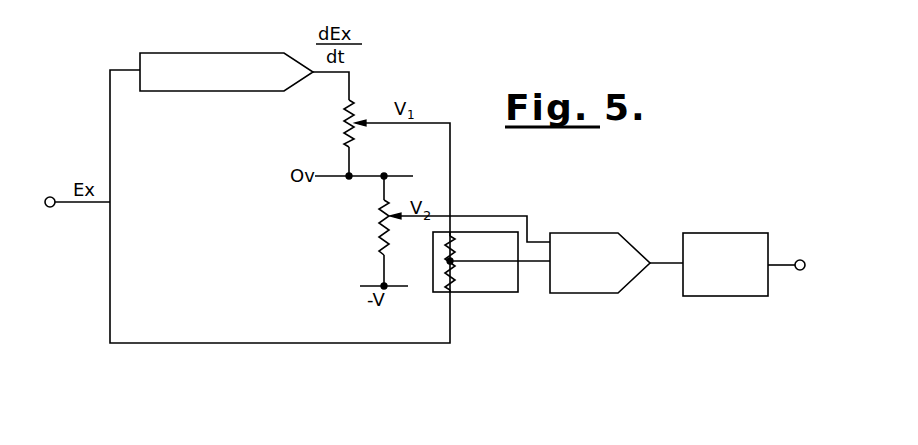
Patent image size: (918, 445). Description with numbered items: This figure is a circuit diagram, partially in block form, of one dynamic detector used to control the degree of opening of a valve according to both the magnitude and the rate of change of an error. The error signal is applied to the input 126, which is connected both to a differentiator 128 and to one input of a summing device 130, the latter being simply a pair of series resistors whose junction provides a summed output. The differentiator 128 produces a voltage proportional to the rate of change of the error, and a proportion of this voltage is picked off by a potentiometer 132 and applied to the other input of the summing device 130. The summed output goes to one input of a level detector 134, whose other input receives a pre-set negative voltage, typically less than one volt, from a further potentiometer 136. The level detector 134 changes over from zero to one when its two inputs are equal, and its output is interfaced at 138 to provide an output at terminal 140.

The input 126 is at (69, 187).
The differentiator 128 is at (226, 72).
The summing device 130 is at (485, 292).
The potentiometer 132 is at (327, 123).
The level detector 134 is at (600, 263).
The further potentiometer 136 is at (361, 227).
The interface 138 is at (725, 264).
The terminal 140 is at (801, 251).